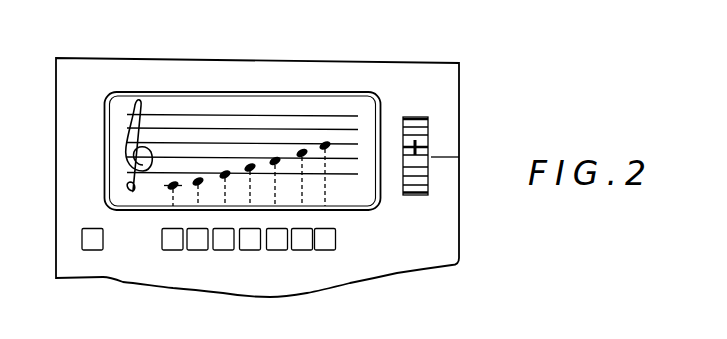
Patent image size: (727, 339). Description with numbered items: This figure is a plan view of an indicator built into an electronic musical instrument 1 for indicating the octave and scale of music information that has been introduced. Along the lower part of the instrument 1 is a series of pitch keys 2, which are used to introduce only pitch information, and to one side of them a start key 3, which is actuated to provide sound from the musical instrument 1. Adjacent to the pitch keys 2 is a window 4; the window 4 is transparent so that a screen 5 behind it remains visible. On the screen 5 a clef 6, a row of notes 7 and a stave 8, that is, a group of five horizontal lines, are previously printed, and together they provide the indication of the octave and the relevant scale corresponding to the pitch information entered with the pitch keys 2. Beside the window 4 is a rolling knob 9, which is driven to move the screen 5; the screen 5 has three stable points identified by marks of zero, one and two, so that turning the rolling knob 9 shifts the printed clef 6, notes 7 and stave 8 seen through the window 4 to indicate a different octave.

The electronic musical instrument 1 is at (92, 67).
The pitch keys 2 is at (335, 257).
The start key 3 is at (87, 254).
The window 4 is at (228, 92).
The screen 5 is at (320, 108).
The clef 6 is at (145, 106).
The notes 7 is at (274, 157).
The stave 8 is at (178, 115).
The rolling knob 9 is at (413, 117).